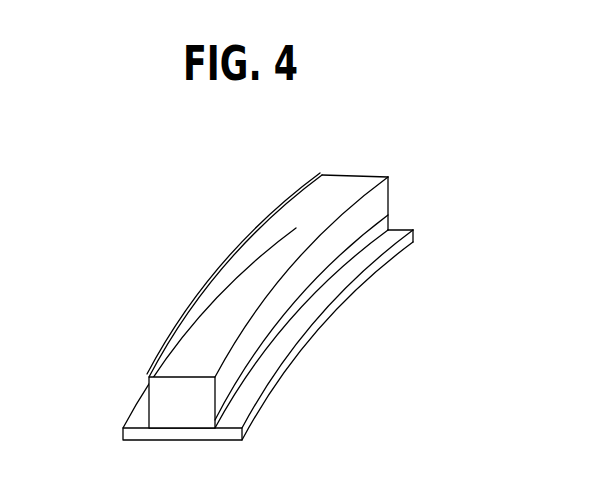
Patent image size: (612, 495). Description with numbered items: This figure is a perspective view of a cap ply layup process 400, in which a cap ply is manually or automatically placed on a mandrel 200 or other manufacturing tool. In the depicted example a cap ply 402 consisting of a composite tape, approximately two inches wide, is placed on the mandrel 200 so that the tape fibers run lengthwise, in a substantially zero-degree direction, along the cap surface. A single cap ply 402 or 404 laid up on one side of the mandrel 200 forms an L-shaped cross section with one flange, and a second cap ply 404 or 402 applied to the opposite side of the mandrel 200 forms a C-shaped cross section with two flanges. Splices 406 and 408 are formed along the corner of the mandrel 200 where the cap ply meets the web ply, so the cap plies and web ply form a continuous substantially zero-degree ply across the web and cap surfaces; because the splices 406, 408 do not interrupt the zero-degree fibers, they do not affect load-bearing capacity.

The cap ply layup process 400 is at (125, 318).
The mandrel 200 is at (302, 350).
The cap ply 402 is at (332, 250).
The second cap ply 404 is at (243, 242).
The splice 406 is at (390, 200).
The splice 408 is at (323, 175).